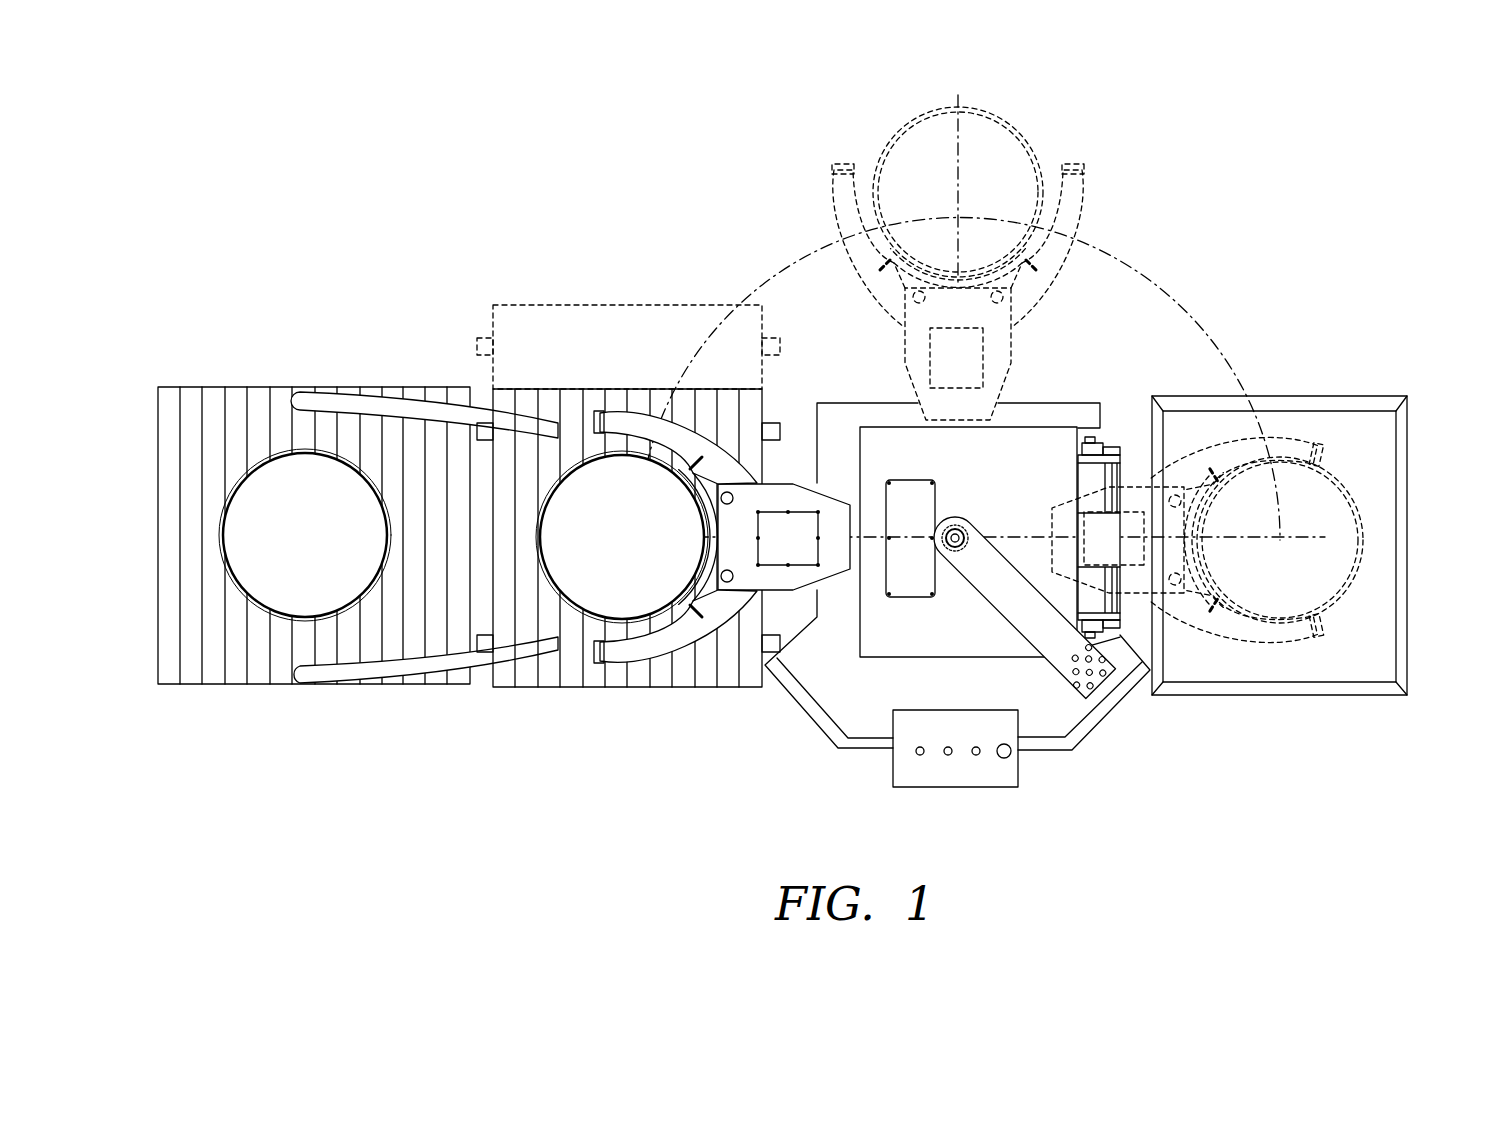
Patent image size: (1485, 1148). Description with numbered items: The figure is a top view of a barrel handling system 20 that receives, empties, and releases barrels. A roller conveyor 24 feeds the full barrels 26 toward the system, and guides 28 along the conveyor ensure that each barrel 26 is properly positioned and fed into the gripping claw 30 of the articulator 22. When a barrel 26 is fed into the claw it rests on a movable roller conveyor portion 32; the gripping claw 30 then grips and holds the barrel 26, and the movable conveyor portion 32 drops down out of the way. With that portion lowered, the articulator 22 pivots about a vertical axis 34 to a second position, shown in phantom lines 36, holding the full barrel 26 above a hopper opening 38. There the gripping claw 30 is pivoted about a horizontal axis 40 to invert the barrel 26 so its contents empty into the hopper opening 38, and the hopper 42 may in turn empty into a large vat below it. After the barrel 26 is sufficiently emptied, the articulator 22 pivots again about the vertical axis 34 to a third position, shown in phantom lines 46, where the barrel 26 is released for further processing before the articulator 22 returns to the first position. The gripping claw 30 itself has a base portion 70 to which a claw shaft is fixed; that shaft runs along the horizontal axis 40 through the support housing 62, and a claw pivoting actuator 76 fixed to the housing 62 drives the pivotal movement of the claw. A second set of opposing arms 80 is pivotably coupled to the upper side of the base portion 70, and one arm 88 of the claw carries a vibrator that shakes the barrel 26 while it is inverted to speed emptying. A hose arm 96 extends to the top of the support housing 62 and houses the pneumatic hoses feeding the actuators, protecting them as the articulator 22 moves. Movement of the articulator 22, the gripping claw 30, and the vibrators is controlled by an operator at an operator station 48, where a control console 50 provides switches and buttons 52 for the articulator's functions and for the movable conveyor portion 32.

The barrel handling system 20 is at (1252, 146).
The articulator 22 is at (968, 551).
The roller conveyor 24 is at (246, 387).
The barrel 26 is at (290, 550).
The guides 28 is at (347, 393).
The gripping claw 30 is at (722, 537).
The movable roller conveyor portion 32 is at (592, 305).
The vertical axis 34 is at (962, 535).
The second position 36 is at (1290, 430).
The hopper opening 38 is at (1380, 507).
The horizontal axis 40 is at (960, 105).
The hopper 42 is at (1309, 545).
The third position 46 is at (1085, 210).
The operator station 48 is at (955, 768).
The control console 50 is at (961, 746).
The switches and buttons 52 is at (1004, 743).
The support housing 62 is at (953, 470).
The base portion 70 is at (784, 573).
The claw pivoting actuator 76 is at (1097, 477).
The second set of opposing arms 80 is at (675, 408).
The arm 88 is at (675, 665).
The hose arm 96 is at (1058, 665).